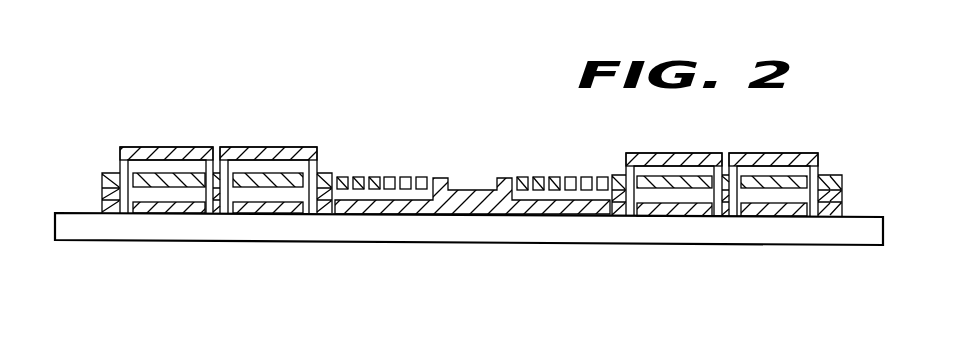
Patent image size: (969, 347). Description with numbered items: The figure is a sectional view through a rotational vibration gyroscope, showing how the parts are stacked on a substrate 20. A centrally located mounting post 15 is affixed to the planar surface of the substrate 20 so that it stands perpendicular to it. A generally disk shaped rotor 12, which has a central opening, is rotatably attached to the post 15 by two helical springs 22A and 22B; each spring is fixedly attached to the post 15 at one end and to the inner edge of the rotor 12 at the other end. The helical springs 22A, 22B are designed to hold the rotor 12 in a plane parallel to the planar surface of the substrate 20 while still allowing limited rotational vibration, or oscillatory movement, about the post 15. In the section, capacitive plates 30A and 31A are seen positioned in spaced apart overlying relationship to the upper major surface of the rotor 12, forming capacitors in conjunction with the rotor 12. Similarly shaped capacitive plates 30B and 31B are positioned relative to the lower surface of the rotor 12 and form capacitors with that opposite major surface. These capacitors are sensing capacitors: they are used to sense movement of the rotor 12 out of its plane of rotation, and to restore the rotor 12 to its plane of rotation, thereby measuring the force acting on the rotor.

The substrate 20 is at (133, 243).
The rotor 12 is at (170, 173).
The mounting post 15 is at (458, 190).
The helical spring 22A is at (537, 177).
The helical spring 22B is at (358, 177).
The capacitive plate 30A is at (660, 153).
The capacitive plate 30B is at (768, 217).
The capacitive plate 31A is at (224, 175).
The capacitive plate 31B is at (260, 214).